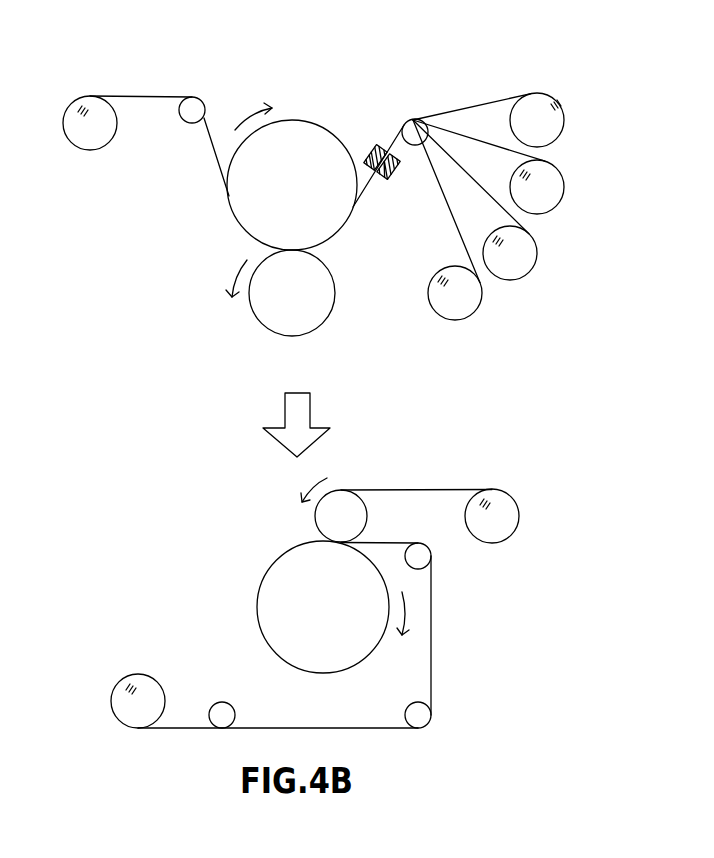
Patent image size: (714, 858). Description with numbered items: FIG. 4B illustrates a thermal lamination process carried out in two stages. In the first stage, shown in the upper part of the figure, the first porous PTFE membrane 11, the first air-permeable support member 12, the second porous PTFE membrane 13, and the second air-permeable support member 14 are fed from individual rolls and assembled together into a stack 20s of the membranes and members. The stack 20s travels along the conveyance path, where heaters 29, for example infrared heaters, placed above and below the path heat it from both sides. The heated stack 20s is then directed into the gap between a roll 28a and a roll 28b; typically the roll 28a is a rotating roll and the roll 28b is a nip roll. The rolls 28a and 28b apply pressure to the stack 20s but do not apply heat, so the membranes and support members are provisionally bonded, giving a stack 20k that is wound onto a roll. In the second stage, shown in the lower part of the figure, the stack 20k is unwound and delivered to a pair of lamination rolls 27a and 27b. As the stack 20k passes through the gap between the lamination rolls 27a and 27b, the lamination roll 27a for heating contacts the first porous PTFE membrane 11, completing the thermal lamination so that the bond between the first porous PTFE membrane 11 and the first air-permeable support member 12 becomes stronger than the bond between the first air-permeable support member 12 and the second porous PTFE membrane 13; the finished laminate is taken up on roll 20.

The first porous PTFE membrane 11 is at (538, 108).
The first air-permeable support member 12 is at (548, 183).
The second porous PTFE membrane 13 is at (520, 258).
The second air-permeable support member 14 is at (467, 303).
The sheet roll 20 is at (138, 687).
The stack 20k is at (90, 137).
The stack 20s is at (397, 140).
The lamination roll 27a is at (278, 607).
The lamination roll 27b is at (330, 523).
The roll 28a is at (292, 137).
The roll 28b is at (277, 313).
The heaters 29 is at (370, 151).